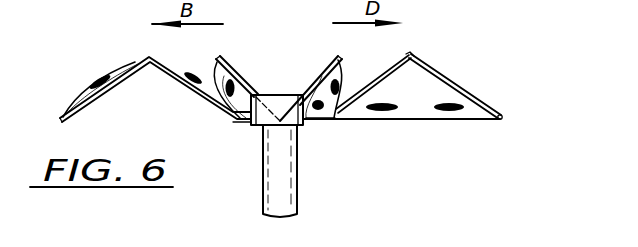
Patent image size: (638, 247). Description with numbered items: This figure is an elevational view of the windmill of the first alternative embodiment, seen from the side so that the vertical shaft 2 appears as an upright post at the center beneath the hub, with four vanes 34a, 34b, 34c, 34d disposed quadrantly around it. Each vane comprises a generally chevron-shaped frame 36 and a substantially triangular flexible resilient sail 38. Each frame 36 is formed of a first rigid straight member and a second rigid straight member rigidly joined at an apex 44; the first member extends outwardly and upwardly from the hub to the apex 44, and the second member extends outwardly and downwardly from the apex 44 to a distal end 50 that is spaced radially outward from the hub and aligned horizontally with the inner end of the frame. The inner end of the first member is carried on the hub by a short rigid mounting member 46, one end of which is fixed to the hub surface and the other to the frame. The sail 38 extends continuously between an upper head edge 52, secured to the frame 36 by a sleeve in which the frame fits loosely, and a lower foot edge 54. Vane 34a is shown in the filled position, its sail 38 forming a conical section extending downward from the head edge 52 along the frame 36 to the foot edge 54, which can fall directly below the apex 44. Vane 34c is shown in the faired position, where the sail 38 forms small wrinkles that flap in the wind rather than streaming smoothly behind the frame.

The vertical shaft 2 is at (293, 180).
The vane 34a is at (444, 76).
The vane 34b is at (216, 72).
The vane 34c is at (125, 62).
The vane 34d is at (318, 80).
The chevron-shaped frame 36 is at (308, 92).
The flexible resilient sail 38 is at (107, 78).
The apex 44 is at (410, 55).
The mounting member 46 is at (247, 122).
The distal end 50 is at (505, 118).
The head edge 52 is at (414, 70).
The foot edge 54 is at (447, 121).